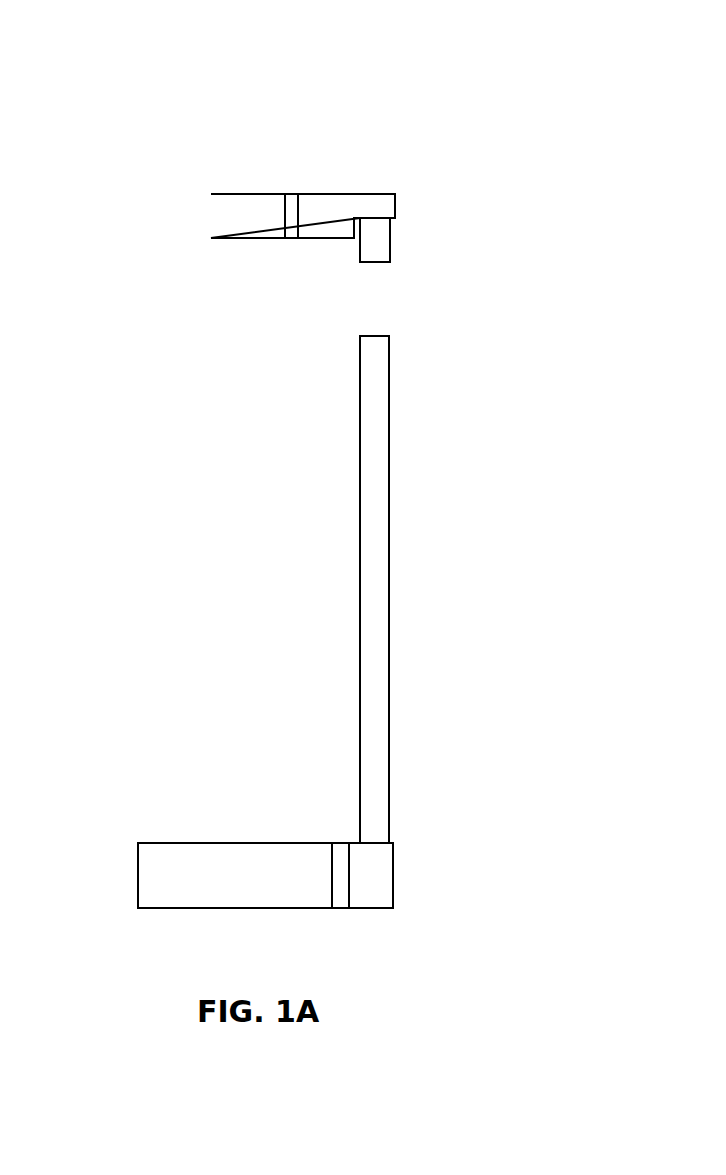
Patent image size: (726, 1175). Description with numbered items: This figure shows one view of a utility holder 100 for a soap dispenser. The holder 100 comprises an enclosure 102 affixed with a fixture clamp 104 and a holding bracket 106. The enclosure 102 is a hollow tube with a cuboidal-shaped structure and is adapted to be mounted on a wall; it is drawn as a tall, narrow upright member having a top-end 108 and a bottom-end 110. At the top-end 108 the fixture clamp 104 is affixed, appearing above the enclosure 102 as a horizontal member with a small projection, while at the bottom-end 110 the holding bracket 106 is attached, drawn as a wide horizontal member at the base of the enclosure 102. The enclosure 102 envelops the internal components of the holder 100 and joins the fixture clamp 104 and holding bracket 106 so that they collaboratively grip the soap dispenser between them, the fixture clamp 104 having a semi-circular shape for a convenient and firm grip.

The holder 100 is at (288, 104).
The enclosure 102 is at (396, 598).
The fixture clamp 104 is at (209, 219).
The holding bracket 106 is at (136, 896).
The top-end 108 is at (406, 353).
The bottom-end 110 is at (400, 836).